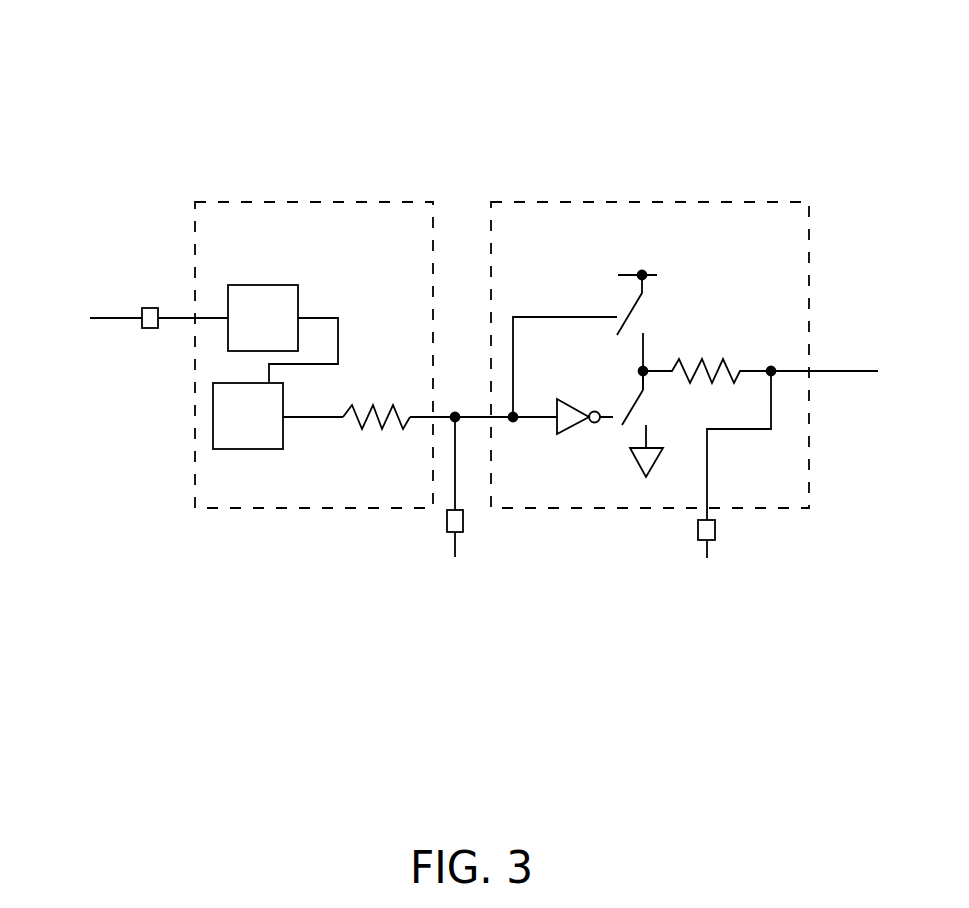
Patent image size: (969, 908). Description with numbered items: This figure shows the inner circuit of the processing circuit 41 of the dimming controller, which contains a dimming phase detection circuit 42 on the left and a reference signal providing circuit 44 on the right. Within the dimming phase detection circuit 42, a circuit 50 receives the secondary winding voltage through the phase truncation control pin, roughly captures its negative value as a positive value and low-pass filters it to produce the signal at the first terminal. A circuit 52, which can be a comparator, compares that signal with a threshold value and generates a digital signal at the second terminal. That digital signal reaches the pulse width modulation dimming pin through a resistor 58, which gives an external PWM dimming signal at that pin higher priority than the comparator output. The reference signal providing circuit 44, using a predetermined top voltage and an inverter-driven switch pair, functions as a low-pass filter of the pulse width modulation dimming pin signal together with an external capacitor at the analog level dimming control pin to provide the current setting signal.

The processing circuit 41 is at (677, 88).
The dimming phase detection circuit 42 is at (327, 202).
The reference signal providing circuit 44 is at (700, 202).
The circuit 50 is at (277, 331).
The circuit 52 is at (262, 429).
The resistor 58 is at (390, 400).